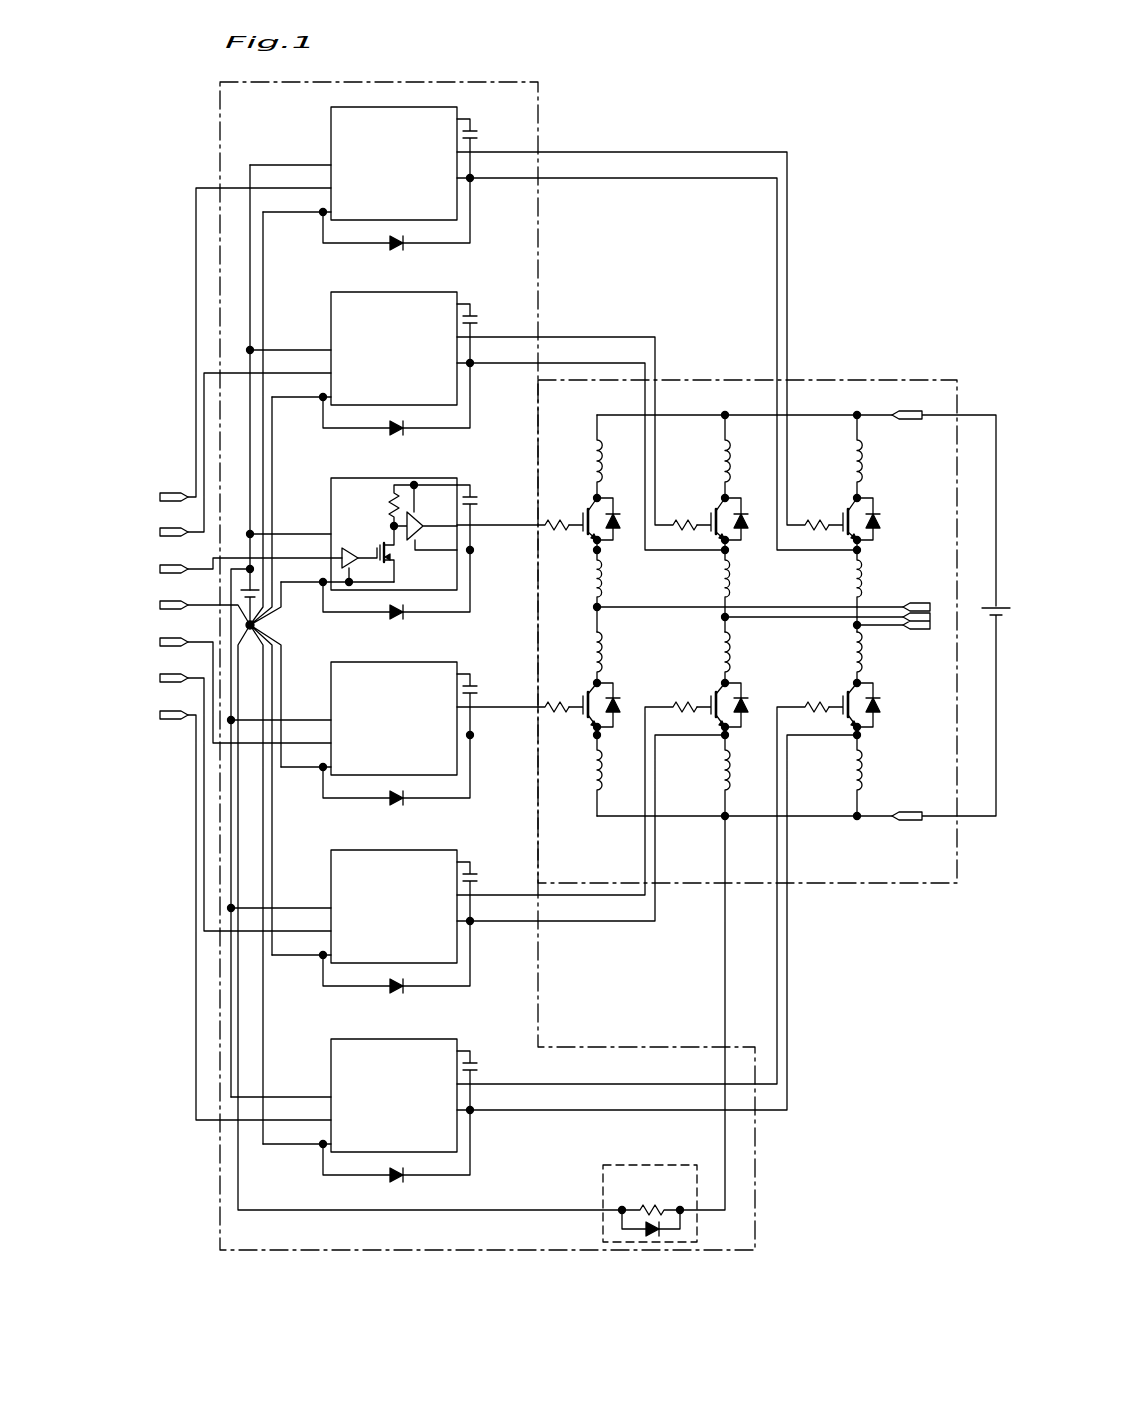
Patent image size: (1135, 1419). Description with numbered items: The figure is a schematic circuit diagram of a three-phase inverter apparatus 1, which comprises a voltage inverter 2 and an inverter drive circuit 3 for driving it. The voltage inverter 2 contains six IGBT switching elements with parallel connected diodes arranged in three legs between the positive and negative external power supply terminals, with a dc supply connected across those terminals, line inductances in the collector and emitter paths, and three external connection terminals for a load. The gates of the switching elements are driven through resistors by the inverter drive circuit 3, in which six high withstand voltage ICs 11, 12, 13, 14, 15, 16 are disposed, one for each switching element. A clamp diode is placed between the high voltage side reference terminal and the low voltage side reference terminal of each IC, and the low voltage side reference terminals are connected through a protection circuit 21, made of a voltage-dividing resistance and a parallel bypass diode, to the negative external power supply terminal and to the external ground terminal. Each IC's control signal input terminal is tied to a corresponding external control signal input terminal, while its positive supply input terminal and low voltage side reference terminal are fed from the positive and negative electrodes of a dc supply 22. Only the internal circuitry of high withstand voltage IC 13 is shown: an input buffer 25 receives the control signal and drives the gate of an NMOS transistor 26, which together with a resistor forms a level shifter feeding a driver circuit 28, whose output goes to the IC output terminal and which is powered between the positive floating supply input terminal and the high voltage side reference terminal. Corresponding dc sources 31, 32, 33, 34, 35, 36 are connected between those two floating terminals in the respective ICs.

The three-phase inverter apparatus 1 is at (797, 106).
The voltage inverter 2 is at (819, 408).
The inverter drive circuit 3 is at (518, 108).
The high withstand voltage IC 11 is at (360, 189).
The high withstand voltage IC 12 is at (360, 374).
The high withstand voltage IC 13 is at (364, 554).
The high withstand voltage IC 14 is at (350, 744).
The high withstand voltage IC 15 is at (350, 932).
The high withstand voltage IC 16 is at (350, 1121).
The protection circuit 21 is at (633, 1203).
The dc supply 22 is at (245, 580).
The input buffer 25 is at (354, 566).
The NMOS transistor 26 is at (380, 547).
The driver circuit 28 is at (420, 523).
The dc source 31 is at (489, 131).
The dc source 32 is at (489, 316).
The dc source 33 is at (489, 504).
The dc source 34 is at (489, 686).
The dc source 35 is at (489, 874).
The dc source 36 is at (489, 1063).